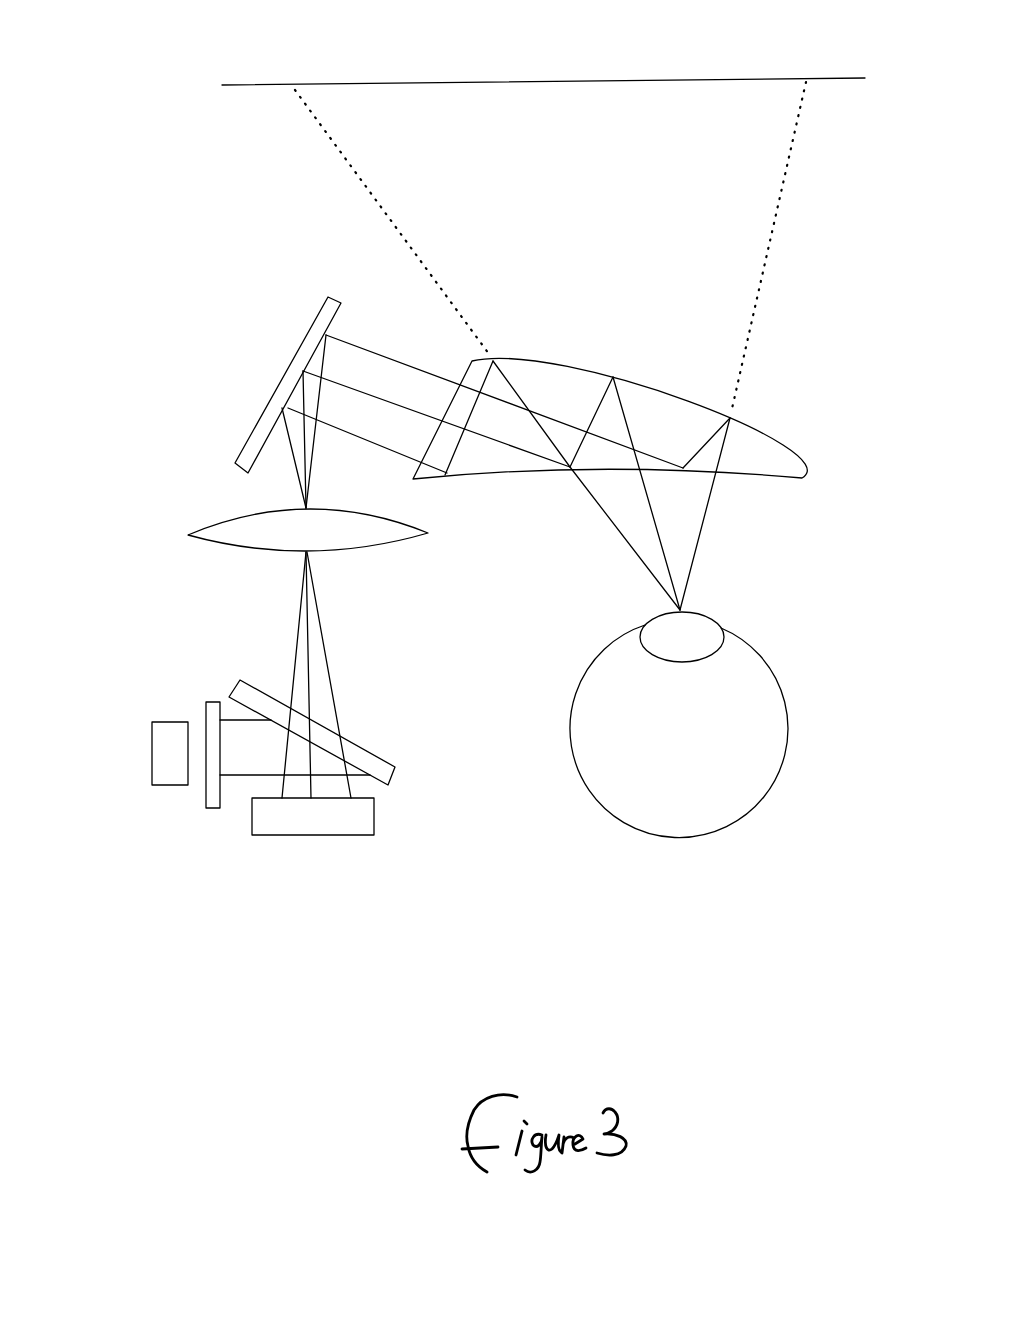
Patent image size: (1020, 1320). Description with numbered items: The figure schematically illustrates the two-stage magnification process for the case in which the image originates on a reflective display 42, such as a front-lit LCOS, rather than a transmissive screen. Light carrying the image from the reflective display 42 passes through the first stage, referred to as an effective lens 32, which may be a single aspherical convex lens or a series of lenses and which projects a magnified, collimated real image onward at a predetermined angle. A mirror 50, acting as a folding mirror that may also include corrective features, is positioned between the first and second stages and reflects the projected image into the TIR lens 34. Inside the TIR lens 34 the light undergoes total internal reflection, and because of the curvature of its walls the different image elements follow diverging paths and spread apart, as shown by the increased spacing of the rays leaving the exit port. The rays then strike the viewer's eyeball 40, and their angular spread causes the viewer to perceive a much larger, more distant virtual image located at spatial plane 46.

The spatial plane 46 is at (718, 80).
The mirror 50 is at (233, 423).
The totally internally reflecting (TIR) lens 34 is at (593, 360).
The effective lens 32 is at (205, 543).
The viewer's eyeball 40 is at (823, 700).
The reflective display 42 is at (223, 872).